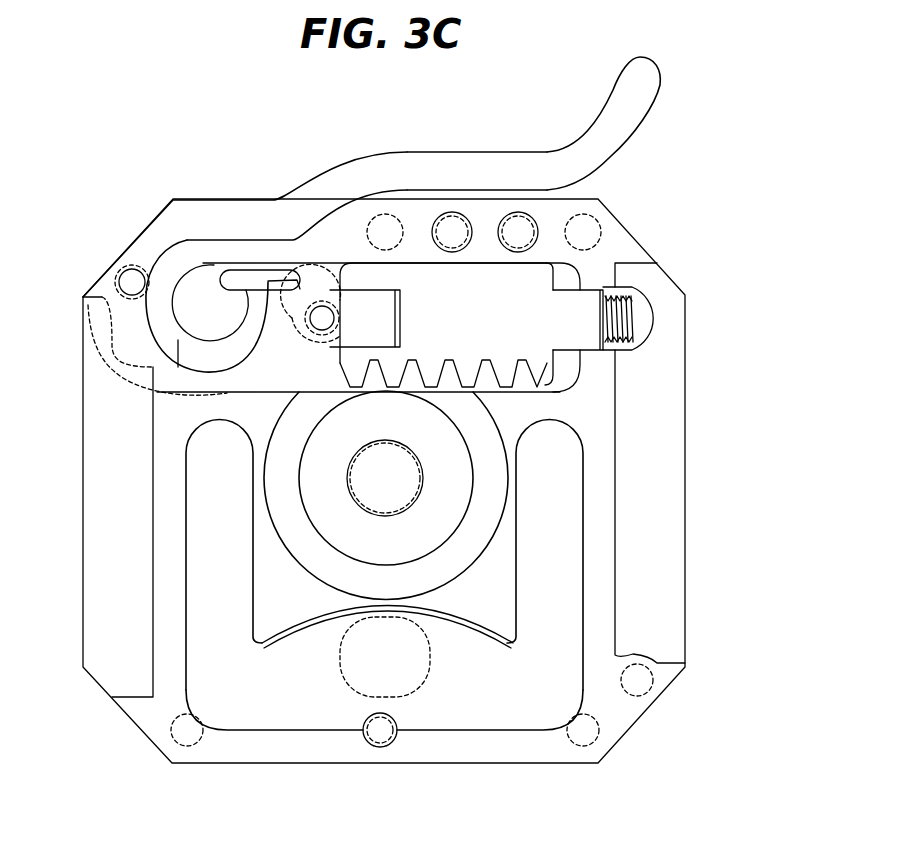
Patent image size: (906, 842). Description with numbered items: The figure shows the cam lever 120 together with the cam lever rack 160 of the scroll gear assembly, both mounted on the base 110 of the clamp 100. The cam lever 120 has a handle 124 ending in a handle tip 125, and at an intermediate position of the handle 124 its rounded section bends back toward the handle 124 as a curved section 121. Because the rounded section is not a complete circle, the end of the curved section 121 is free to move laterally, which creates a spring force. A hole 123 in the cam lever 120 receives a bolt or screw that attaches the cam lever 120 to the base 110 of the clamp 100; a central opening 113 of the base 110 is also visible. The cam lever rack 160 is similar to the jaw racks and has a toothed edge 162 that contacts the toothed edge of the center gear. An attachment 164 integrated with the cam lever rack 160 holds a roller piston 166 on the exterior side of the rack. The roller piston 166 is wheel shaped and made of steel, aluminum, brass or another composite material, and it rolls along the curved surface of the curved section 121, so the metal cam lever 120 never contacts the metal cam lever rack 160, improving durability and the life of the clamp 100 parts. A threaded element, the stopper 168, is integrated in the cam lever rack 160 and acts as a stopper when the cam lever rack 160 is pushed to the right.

The clamp 100 is at (699, 169).
The base 110 is at (686, 487).
The central bore 113 is at (384, 475).
The cam lever 120 is at (363, 141).
The curved section 121 is at (253, 373).
The hole 123 is at (130, 282).
The handle 124 is at (465, 168).
The handle tip 125 is at (604, 108).
The cam lever rack 160 is at (540, 368).
The toothed edge 162 is at (505, 375).
The attachment 164 is at (401, 321).
The roller piston 166 is at (320, 345).
The stopper 168 is at (632, 318).